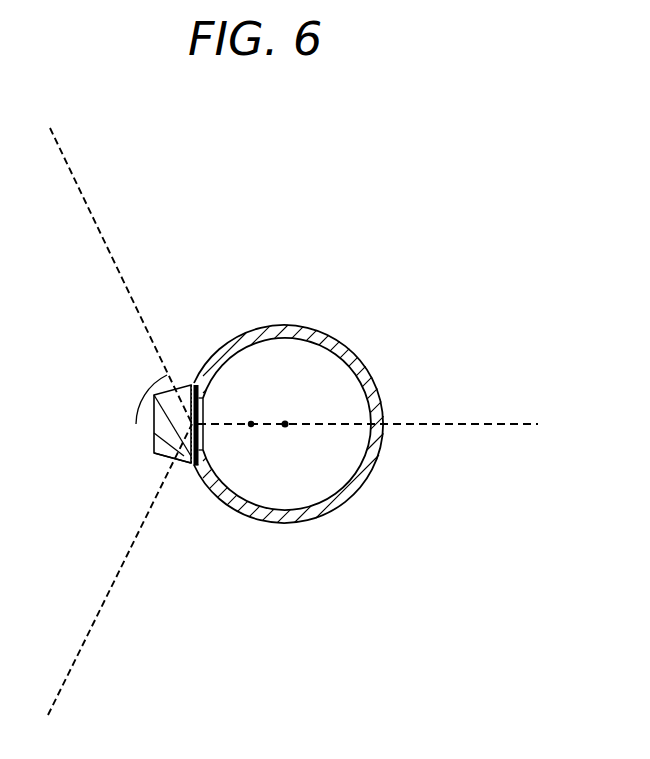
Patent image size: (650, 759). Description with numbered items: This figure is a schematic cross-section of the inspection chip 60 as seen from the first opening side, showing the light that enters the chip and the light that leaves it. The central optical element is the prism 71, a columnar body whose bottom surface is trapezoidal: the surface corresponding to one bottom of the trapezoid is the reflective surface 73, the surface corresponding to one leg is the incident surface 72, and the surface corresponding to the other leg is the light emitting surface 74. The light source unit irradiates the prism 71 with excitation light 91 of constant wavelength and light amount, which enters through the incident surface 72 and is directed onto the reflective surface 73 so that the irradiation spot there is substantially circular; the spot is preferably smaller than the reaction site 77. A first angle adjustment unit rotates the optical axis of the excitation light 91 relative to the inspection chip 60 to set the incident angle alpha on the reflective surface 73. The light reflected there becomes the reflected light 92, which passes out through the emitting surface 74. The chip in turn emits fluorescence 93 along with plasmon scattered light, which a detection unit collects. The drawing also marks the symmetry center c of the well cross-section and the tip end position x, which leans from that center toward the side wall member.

The inspection chip 60 is at (381, 278).
The prism 71 is at (153, 432).
The incident surface 72 is at (183, 388).
The reflective surface 73 is at (162, 455).
The light emitting surface 74 is at (188, 467).
The reaction site 77 is at (198, 430).
The excitation light 91 is at (90, 217).
The reflected light 92 is at (98, 615).
The fluorescence 93 is at (460, 425).